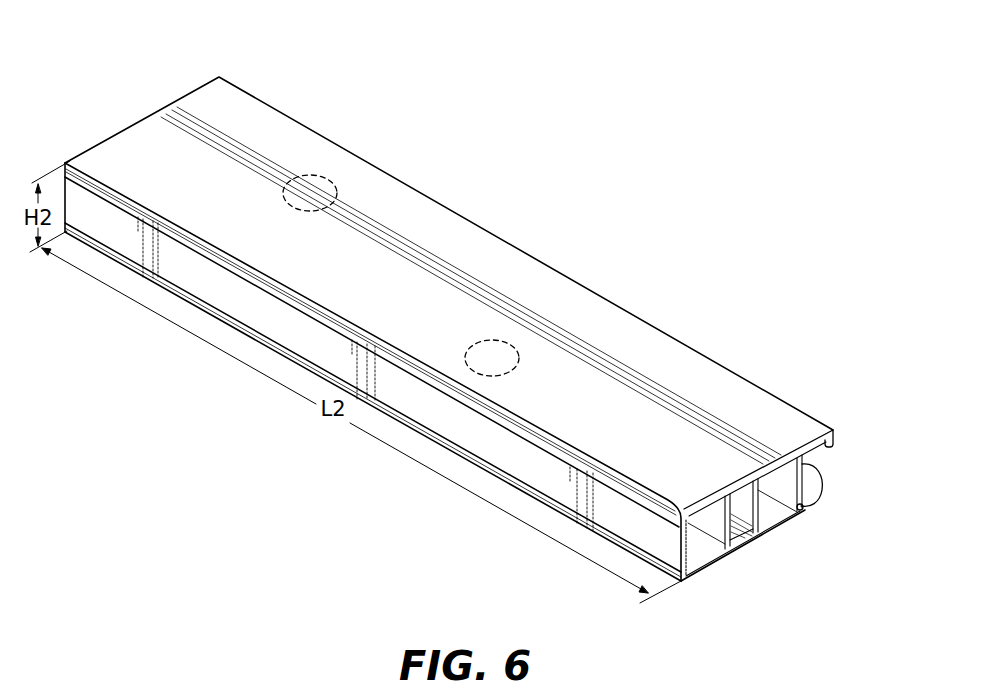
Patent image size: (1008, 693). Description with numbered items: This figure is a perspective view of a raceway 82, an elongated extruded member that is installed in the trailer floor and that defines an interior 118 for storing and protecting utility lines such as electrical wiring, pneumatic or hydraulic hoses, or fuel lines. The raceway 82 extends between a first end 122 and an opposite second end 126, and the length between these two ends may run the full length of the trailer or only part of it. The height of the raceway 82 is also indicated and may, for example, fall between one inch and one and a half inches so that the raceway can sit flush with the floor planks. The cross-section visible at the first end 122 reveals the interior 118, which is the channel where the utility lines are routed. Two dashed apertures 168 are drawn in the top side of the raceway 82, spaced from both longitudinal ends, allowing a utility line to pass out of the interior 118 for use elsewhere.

The raceway 82 is at (575, 131).
The second end 126 is at (182, 59).
The aperture 168 is at (499, 339).
The first end 122 is at (827, 389).
The interior 118 is at (763, 497).